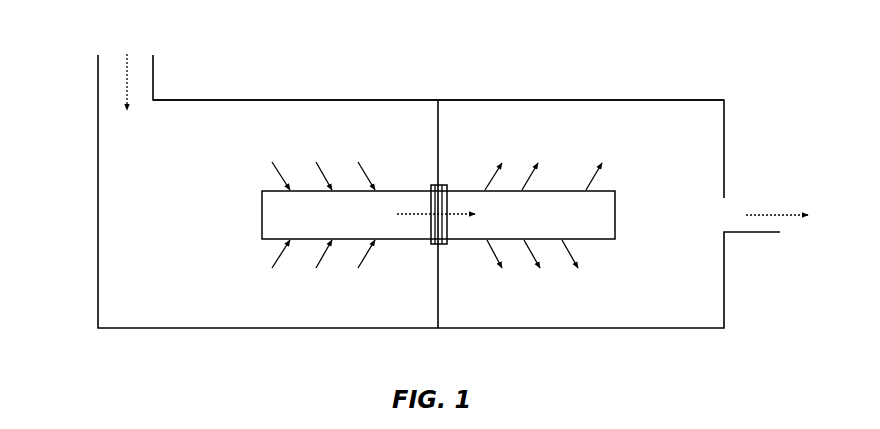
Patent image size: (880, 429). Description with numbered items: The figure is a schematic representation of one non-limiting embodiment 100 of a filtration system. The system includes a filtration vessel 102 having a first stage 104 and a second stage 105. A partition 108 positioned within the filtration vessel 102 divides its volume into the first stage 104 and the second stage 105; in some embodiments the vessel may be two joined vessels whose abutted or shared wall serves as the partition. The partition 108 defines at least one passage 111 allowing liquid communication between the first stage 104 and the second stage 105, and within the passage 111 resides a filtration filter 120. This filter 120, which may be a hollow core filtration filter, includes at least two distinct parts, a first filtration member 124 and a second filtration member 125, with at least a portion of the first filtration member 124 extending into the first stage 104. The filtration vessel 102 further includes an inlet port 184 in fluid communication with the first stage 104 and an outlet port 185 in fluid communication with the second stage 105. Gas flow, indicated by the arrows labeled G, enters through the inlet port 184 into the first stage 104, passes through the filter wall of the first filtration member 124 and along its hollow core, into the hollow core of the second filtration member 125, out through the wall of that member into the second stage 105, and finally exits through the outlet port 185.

The filtration system embodiment 100 is at (425, 210).
The filtration vessel 102 is at (426, 100).
The first stage 104 is at (179, 117).
The second stage 105 is at (667, 100).
The partition 108 is at (440, 135).
The passage 111 is at (451, 250).
The filtration filter 120 is at (564, 163).
The first filtration member 124 is at (262, 215).
The second filtration member 125 is at (598, 230).
The inlet port 184 is at (90, 45).
The outlet port 185 is at (784, 190).